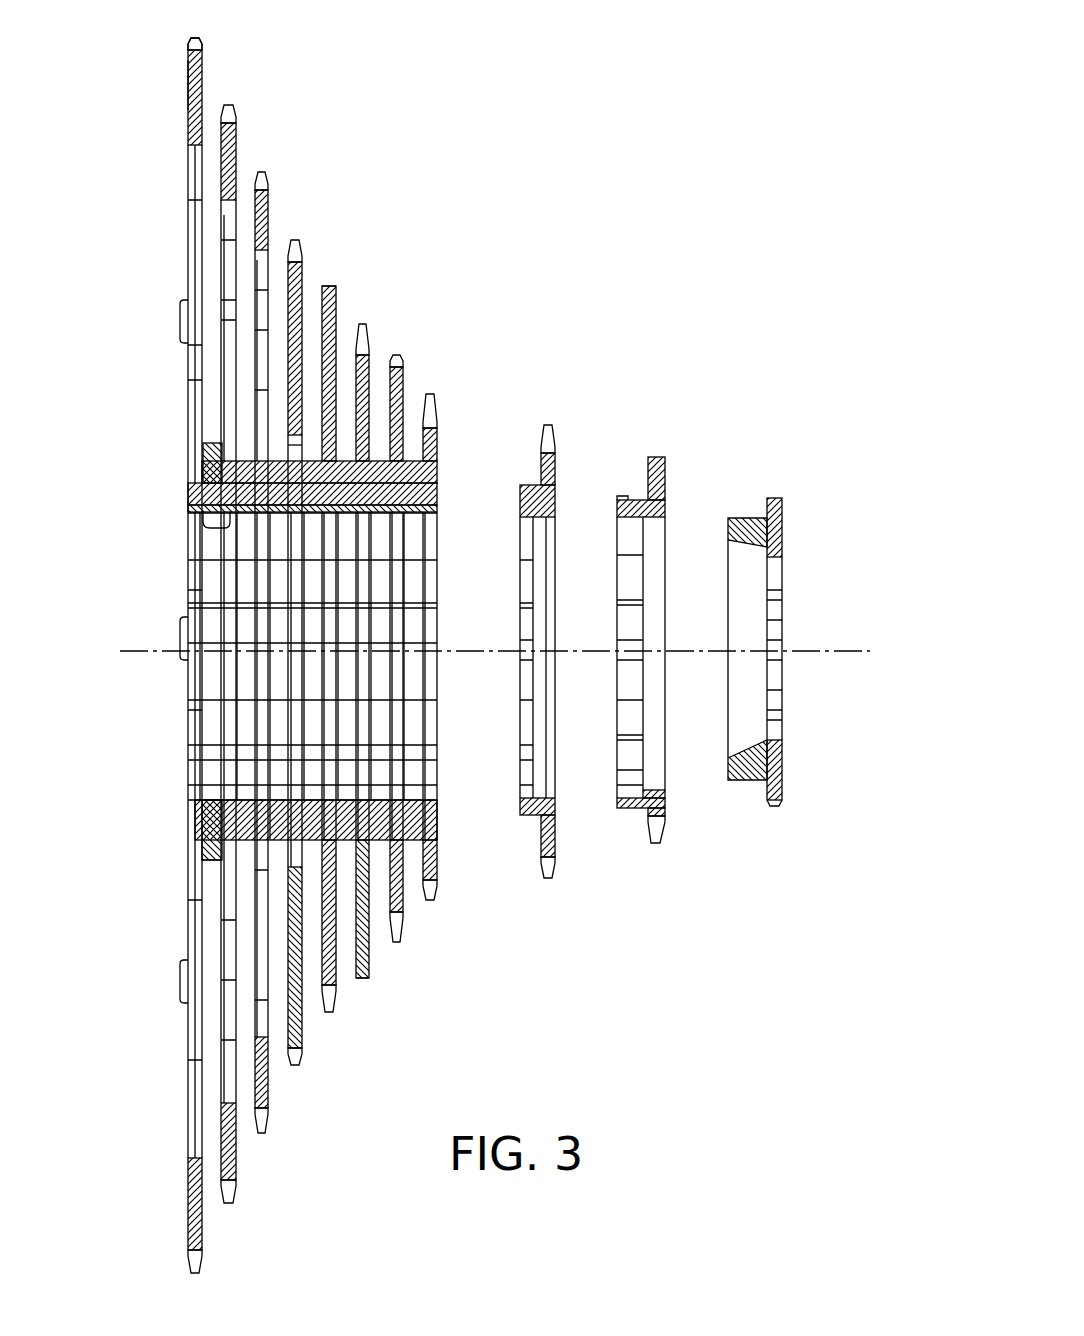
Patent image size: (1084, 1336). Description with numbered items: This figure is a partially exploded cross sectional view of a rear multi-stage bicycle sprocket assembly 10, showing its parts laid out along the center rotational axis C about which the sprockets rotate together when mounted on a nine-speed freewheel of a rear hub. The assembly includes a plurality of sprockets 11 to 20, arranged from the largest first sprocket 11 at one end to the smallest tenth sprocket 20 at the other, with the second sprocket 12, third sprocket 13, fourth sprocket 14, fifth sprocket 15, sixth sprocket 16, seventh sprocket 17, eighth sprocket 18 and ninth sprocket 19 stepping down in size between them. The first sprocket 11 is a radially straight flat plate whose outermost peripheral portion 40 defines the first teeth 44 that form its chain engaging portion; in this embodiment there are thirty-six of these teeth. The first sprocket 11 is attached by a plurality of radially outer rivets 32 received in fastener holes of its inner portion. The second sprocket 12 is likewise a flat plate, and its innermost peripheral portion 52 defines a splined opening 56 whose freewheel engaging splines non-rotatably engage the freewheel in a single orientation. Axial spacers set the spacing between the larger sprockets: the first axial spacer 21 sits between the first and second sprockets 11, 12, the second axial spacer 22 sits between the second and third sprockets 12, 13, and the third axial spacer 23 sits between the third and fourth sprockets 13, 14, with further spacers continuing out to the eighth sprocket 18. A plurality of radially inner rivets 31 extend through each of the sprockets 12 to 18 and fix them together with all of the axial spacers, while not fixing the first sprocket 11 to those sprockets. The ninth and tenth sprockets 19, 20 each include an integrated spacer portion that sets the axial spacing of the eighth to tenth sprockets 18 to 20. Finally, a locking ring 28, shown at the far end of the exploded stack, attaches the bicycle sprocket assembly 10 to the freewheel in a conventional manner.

The bicycle sprocket assembly 10 is at (463, 117).
The first sprocket 11 is at (203, 61).
The second sprocket 12 is at (238, 131).
The third sprocket 13 is at (271, 199).
The fourth sprocket 14 is at (304, 262).
The fifth sprocket 15 is at (338, 302).
The sixth sprocket 16 is at (371, 335).
The seventh sprocket 17 is at (405, 367).
The eighth sprocket 18 is at (439, 405).
The ninth sprocket 19 is at (557, 440).
The tenth sprocket 20 is at (667, 465).
The first axial spacer 21 is at (200, 851).
The second axial spacer 22 is at (230, 828).
The third axial spacer 23 is at (283, 812).
The locking ring 28 is at (784, 511).
The inner rivets 31 is at (187, 495).
The outer rivets 32 is at (178, 322).
The outermost peripheral portion 40 is at (187, 80).
The first teeth 44 is at (190, 37).
The innermost peripheral portion 52 is at (205, 465).
The splined opening 56 is at (215, 527).
The center rotational axis C is at (812, 642).